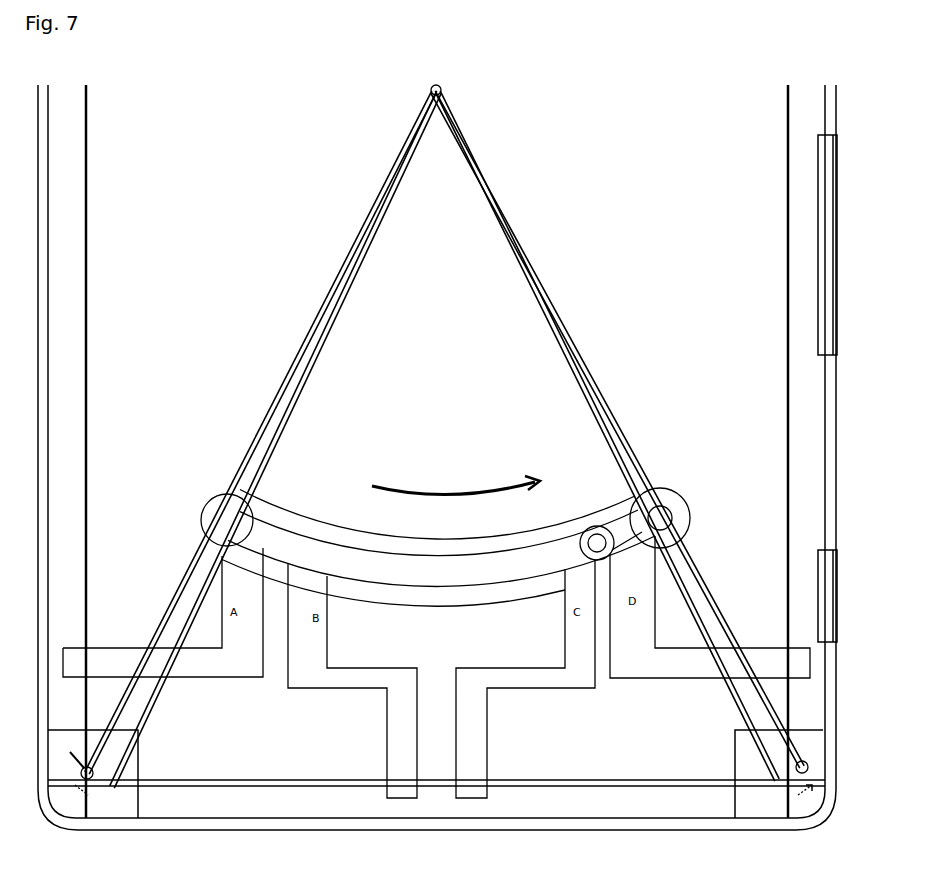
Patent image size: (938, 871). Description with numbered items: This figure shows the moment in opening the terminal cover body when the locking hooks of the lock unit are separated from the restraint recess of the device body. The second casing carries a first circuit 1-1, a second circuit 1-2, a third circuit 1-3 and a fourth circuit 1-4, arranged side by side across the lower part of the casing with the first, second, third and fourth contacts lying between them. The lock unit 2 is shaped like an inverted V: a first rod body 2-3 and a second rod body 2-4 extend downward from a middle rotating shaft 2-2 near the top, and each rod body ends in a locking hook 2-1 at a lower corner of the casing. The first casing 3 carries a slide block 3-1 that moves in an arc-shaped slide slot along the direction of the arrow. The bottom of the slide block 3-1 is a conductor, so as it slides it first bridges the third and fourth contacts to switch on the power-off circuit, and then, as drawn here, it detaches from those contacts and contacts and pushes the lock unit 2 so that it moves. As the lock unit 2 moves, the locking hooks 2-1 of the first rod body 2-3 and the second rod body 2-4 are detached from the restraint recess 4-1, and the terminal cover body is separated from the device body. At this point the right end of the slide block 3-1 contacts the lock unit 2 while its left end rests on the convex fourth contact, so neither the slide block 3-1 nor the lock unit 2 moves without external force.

The first circuit 1-1 is at (163, 624).
The second circuit 1-2 is at (352, 680).
The third circuit 1-3 is at (525, 679).
The fourth circuit 1-4 is at (710, 623).
The lock unit 2 is at (444, 436).
The locking hook 2-1 is at (112, 787).
The middle rotating shaft 2-2 is at (466, 98).
The first rod body 2-3 is at (310, 332).
The second rod body 2-4 is at (560, 318).
The first casing 3 is at (443, 797).
The slide block 3-1 is at (643, 507).
The restraint recess 4-1 is at (68, 754).